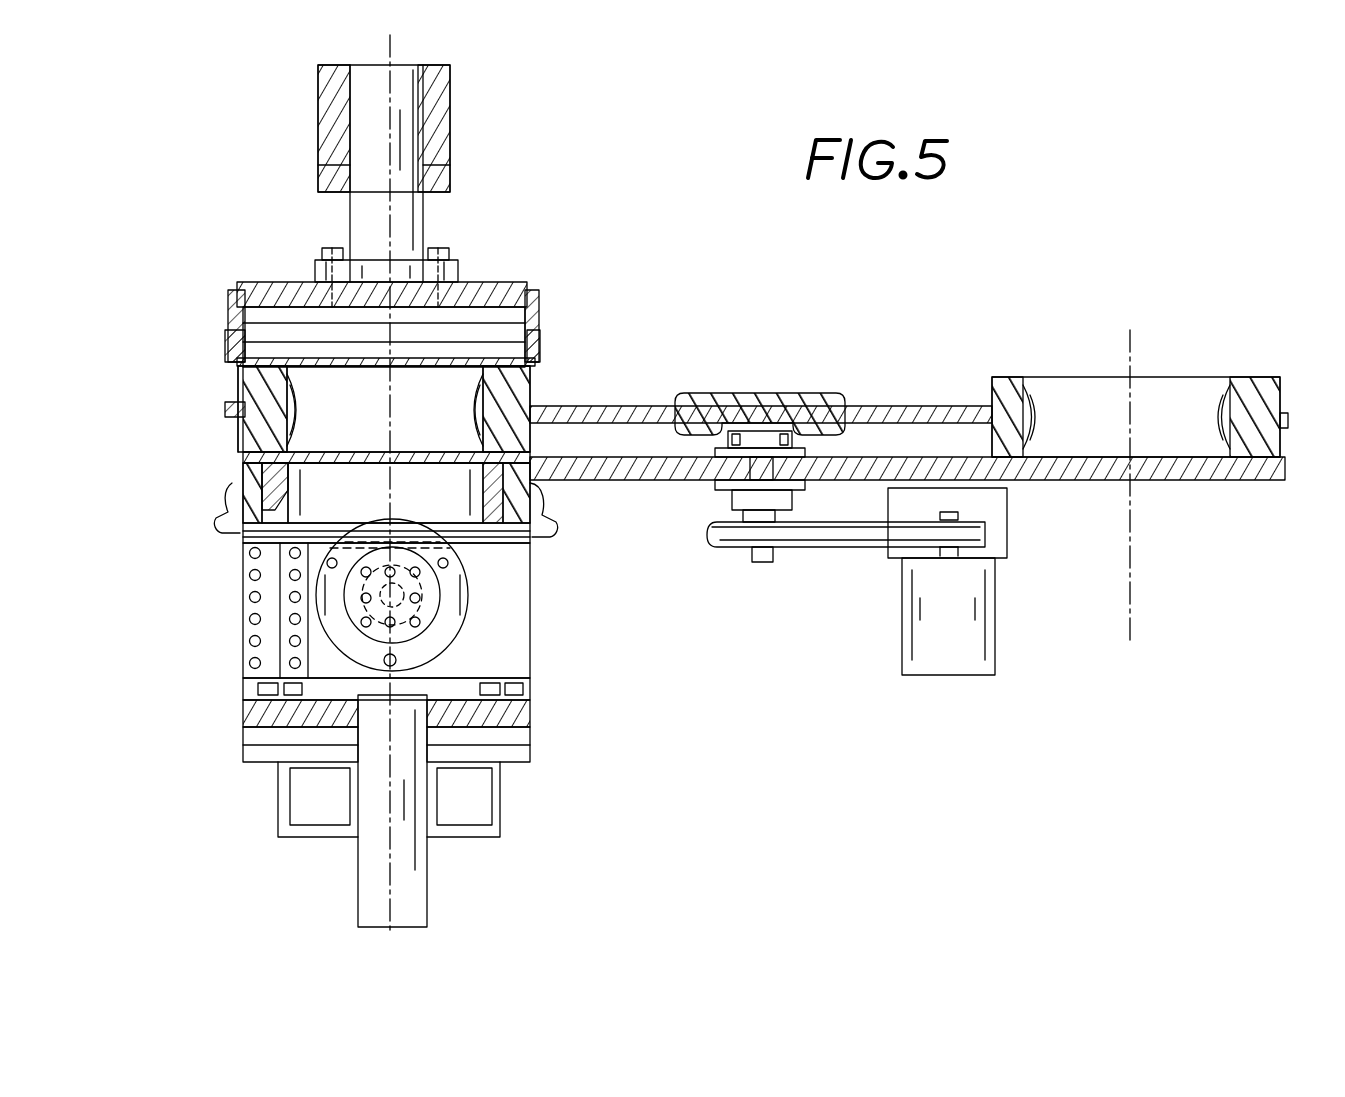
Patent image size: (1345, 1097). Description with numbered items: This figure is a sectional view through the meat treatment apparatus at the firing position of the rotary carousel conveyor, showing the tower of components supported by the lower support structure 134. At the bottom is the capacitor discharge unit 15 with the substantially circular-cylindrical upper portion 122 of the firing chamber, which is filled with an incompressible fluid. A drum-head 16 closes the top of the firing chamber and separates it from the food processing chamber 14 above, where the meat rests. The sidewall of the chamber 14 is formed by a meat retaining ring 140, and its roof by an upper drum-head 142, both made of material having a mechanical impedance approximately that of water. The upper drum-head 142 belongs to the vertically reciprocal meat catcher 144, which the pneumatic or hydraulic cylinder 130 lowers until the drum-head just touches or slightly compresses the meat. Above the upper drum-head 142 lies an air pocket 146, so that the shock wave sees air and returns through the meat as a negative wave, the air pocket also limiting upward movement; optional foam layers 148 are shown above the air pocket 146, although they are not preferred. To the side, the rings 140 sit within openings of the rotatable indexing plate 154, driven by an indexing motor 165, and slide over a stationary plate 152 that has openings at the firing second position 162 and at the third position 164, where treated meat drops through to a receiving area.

The food processing chamber 14 is at (440, 412).
The capacitor discharge unit 15 is at (512, 632).
The drum-head 16 is at (316, 452).
The upper portion 122 is at (296, 500).
The pneumatic or hydraulic cylinder 130 is at (482, 166).
The lower support structure 134 is at (525, 845).
The meat retaining ring 140 is at (238, 377).
The upper drum-head 142 is at (312, 369).
The meat catcher 144 is at (480, 256).
The air pocket 146 is at (505, 352).
The foam layers 148 is at (250, 332).
The stationary plate 152 is at (650, 482).
The indexing plate 154 is at (600, 406).
The second position 162 is at (225, 610).
The third position 164 is at (1166, 524).
The indexing motor 165 is at (975, 660).